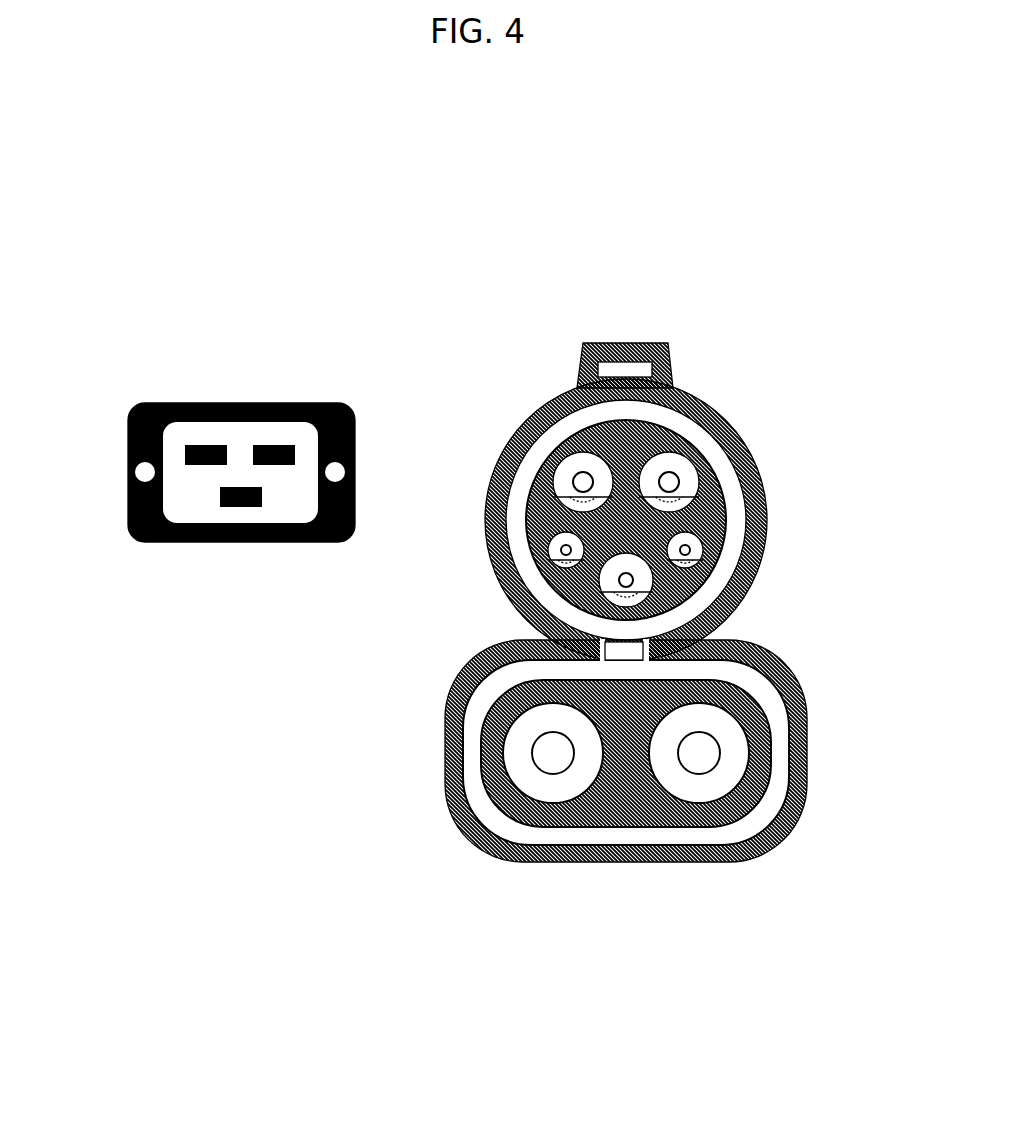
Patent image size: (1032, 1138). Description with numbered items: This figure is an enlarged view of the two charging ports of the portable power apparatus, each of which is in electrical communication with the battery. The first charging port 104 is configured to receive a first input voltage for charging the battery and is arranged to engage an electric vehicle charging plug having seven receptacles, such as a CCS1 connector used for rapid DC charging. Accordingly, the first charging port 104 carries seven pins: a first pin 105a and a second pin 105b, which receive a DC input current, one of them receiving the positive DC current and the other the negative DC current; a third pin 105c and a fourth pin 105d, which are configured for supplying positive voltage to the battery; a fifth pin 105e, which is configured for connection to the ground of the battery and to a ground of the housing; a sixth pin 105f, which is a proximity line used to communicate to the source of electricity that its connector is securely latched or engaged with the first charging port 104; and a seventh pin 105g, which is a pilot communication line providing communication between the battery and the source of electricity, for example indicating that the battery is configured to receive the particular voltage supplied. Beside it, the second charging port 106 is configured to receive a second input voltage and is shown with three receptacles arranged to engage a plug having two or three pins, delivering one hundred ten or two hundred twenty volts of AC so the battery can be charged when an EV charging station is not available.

The first charging port 104 is at (477, 613).
The first pin 105a is at (553, 753).
The second pin 105b is at (699, 753).
The third pin 105c is at (583, 482).
The fourth pin 105d is at (669, 482).
The fifth pin 105e is at (626, 580).
The sixth pin 105f is at (566, 550).
The seventh pin 105g is at (685, 550).
The second charging port 106 is at (223, 568).